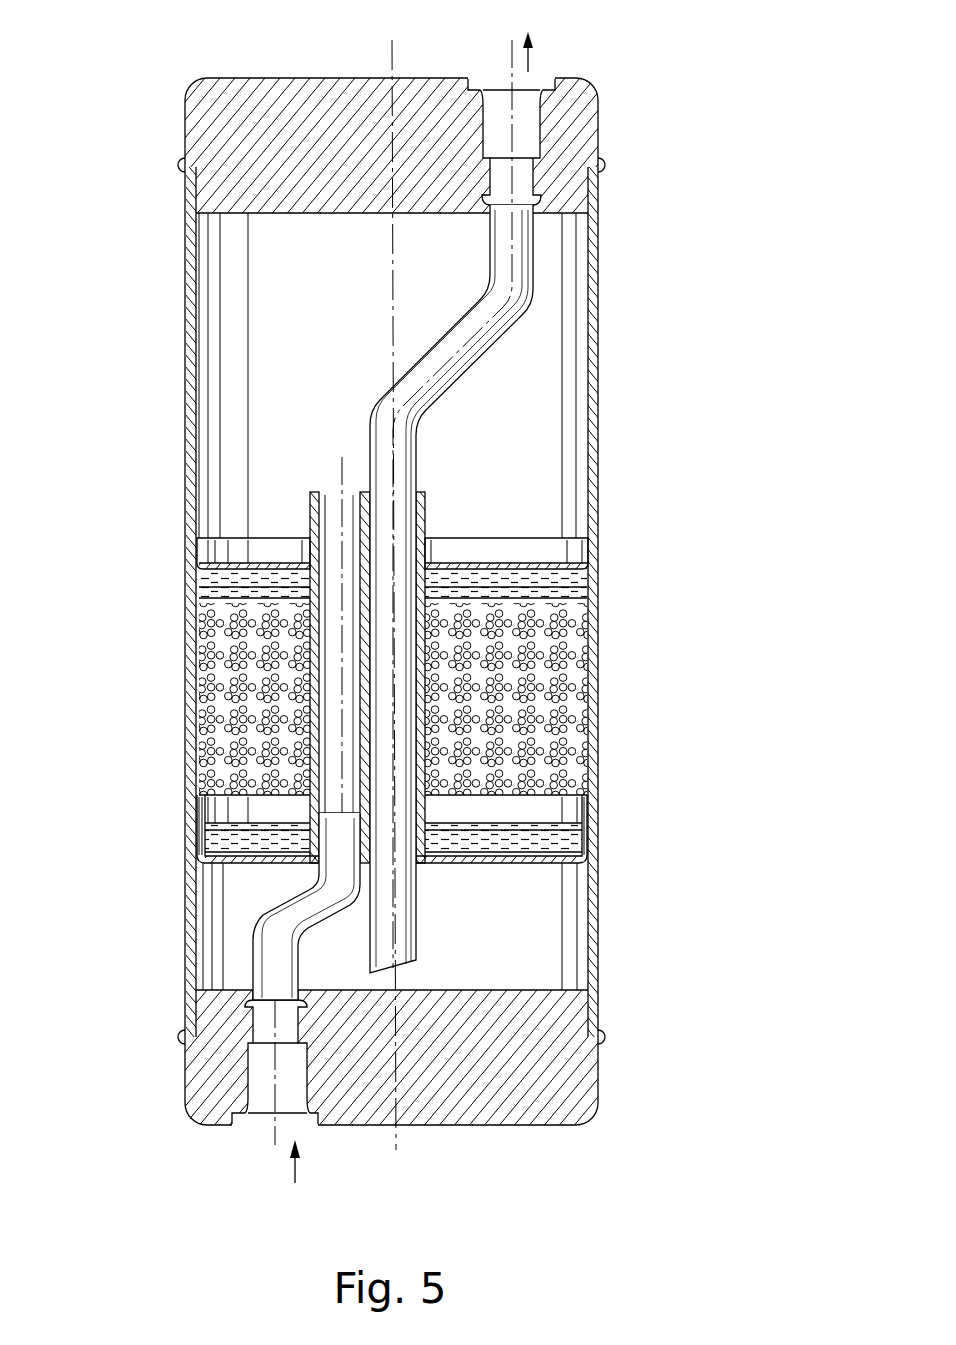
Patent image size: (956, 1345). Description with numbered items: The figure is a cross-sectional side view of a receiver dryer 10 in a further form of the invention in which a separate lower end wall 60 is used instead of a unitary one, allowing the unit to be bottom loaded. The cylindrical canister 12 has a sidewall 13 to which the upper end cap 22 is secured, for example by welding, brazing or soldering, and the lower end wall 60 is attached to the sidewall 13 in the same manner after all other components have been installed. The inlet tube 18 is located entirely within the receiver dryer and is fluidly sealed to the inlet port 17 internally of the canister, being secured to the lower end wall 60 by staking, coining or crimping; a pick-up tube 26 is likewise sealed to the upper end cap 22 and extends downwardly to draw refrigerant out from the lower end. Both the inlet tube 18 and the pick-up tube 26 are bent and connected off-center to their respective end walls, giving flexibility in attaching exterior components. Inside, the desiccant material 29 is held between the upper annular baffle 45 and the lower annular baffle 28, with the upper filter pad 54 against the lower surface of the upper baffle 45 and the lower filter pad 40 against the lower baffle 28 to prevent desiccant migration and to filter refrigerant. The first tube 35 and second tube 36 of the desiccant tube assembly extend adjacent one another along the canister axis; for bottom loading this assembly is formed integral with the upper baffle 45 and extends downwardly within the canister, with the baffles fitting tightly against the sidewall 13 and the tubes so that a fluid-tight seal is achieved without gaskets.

The receiver dryer 10 is at (750, 92).
The cylindrical canister 12 is at (597, 266).
The sidewall 13 is at (597, 760).
The inlet port 17 is at (258, 1120).
The inlet tube 18 is at (270, 927).
The upper end cap 22 is at (258, 97).
The pick-up tube 26 is at (483, 342).
The lower annular baffle 28 is at (528, 868).
The desiccant material 29 is at (563, 700).
The first tube 35 is at (425, 520).
The second tube 36 is at (309, 523).
The lower filter pad 40 is at (567, 845).
The upper annular baffle 45 is at (543, 568).
The upper filter pad 54 is at (543, 580).
The lower end wall 60 is at (532, 1100).